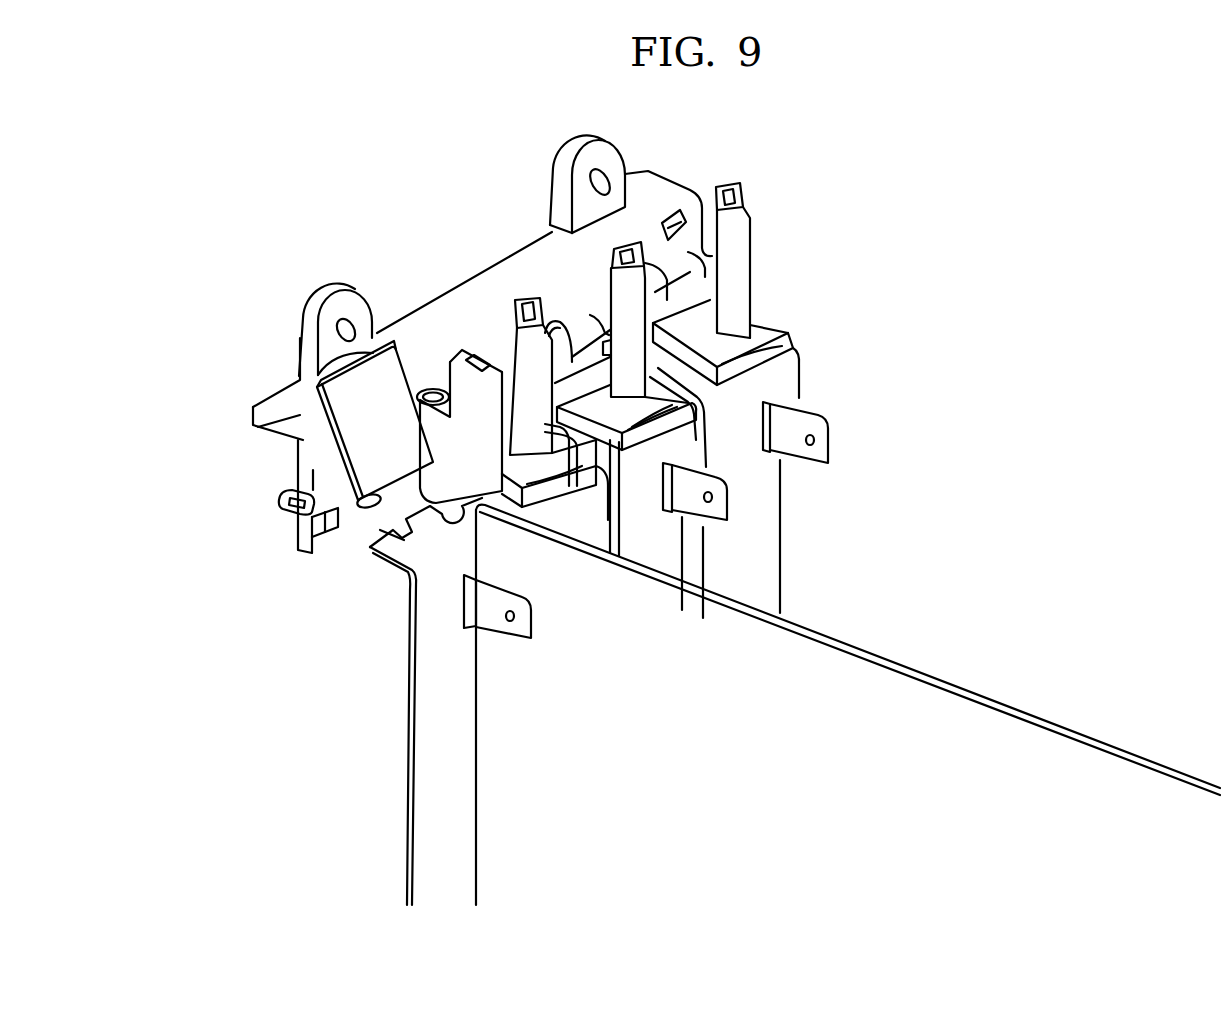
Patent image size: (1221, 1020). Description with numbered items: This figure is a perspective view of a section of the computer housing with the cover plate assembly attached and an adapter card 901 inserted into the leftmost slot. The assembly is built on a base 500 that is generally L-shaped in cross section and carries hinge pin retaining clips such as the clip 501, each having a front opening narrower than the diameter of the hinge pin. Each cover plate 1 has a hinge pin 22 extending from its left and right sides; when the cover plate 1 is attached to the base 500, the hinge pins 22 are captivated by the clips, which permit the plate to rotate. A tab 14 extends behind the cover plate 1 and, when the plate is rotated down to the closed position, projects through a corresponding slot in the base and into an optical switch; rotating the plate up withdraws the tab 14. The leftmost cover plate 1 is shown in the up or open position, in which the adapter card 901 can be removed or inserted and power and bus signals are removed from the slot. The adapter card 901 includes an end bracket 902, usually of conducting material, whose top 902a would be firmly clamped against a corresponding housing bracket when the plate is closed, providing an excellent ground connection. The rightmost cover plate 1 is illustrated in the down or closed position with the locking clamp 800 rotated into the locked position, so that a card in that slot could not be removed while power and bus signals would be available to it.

The base 500 is at (467, 277).
The locking clamp 800 is at (734, 268).
The cover plate 1 is at (378, 420).
The hinge pin retaining clip 501 is at (305, 482).
The hinge pin 22 is at (290, 509).
The tab 14 is at (367, 509).
The top of the conductive end bracket 902a is at (413, 547).
The end bracket 902 is at (415, 729).
The adapter card 901 is at (680, 728).